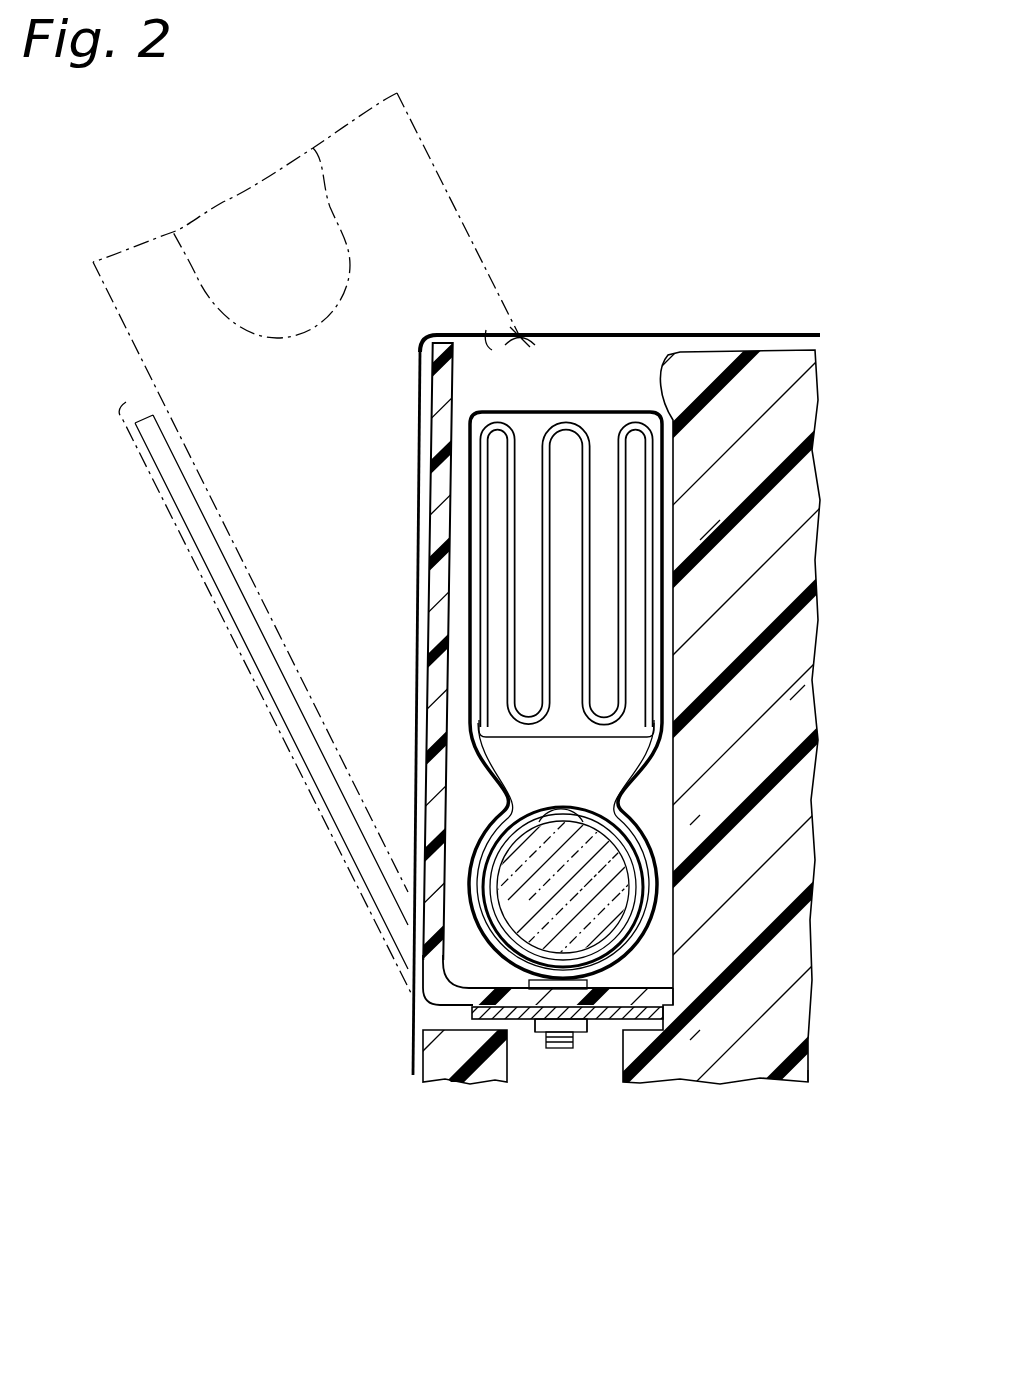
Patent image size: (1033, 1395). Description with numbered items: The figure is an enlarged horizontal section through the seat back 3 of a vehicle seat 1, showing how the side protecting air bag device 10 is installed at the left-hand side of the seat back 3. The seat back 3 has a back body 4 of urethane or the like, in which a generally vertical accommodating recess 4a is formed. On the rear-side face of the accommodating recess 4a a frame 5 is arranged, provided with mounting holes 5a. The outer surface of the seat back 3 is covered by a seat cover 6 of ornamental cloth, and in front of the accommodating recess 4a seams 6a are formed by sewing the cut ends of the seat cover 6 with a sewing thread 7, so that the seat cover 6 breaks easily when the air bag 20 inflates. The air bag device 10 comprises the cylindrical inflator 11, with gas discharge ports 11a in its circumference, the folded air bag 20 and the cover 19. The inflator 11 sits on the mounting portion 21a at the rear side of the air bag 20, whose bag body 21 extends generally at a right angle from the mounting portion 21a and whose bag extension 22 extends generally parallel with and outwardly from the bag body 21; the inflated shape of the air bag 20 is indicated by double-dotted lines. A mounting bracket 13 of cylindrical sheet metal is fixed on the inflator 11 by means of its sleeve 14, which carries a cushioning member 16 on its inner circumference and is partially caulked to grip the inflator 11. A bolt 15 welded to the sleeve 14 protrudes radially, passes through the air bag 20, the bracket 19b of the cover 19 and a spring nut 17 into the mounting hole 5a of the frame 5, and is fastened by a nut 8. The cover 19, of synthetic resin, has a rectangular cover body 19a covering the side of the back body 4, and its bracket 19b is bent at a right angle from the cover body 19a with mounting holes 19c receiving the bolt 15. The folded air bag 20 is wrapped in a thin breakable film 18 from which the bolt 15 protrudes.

The seat 1 is at (721, 717).
The seat back 3 is at (782, 1110).
The back body 4 is at (817, 697).
The accommodating recess 4a is at (645, 835).
The frame 5 is at (650, 1050).
The mounting hole 5a is at (576, 1022).
The seat cover 6 is at (600, 335).
The seam 6a is at (490, 326).
The sewing thread 7 is at (517, 335).
The nut 8 is at (535, 1010).
The side protecting air bag device 10 is at (410, 1003).
The inflator 11 is at (618, 893).
The gas discharge port 11a is at (553, 822).
The mounting bracket 13 is at (640, 785).
The sleeve 14 is at (605, 797).
The bolt 15 is at (575, 1050).
The cushioning member 16 is at (510, 797).
The spring nut 17 is at (640, 1028).
The film 18 is at (660, 533).
The cover 19 is at (423, 703).
The cover body 19a is at (445, 582).
The bracket 19b is at (463, 997).
The mounting hole 19c is at (552, 1045).
The air bag 20 is at (598, 423).
The bag body 21 is at (660, 417).
The mounting portion 21a is at (640, 980).
The bag extension 22 is at (295, 128).